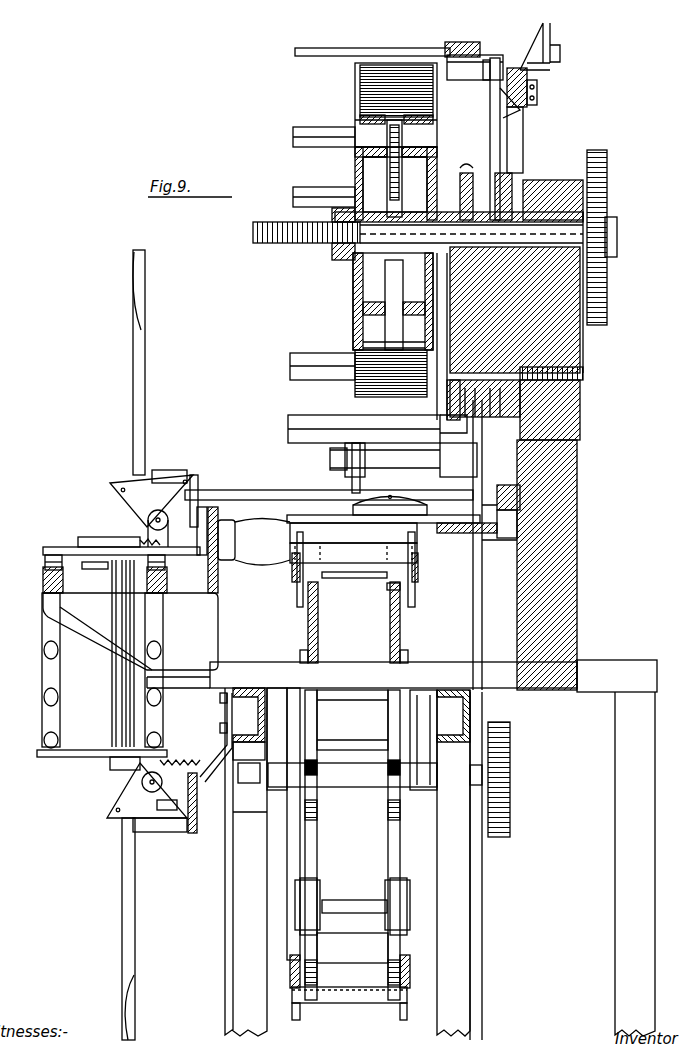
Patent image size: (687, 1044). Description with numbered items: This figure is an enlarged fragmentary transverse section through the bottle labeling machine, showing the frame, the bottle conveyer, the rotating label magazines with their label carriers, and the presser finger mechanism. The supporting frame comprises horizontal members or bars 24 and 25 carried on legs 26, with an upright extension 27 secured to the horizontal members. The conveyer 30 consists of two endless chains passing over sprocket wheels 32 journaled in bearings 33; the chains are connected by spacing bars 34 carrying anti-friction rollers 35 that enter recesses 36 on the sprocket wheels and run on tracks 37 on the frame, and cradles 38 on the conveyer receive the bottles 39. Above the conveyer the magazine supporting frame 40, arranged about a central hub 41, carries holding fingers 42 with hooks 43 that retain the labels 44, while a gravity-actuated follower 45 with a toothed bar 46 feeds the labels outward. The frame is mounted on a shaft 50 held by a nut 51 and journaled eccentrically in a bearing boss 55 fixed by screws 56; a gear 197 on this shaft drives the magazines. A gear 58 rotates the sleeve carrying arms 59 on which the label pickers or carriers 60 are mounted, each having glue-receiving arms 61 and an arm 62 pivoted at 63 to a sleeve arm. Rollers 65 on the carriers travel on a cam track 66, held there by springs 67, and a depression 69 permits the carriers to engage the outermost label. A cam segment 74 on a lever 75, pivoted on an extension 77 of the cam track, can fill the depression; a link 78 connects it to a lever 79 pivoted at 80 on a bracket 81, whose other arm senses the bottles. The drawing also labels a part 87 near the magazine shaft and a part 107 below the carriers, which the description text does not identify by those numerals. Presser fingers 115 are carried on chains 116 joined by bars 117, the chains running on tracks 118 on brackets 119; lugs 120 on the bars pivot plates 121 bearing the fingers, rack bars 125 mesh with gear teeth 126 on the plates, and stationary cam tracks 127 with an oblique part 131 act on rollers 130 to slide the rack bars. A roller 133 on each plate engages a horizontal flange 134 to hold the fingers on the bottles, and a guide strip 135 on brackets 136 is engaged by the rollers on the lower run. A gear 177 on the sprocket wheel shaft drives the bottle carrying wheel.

The horizontal members or bars 24 is at (351, 715).
The horizontal members or bars 25 is at (402, 676).
The legs 26 is at (440, 862).
The upright extension 27 is at (573, 512).
The conveyer 30 is at (290, 848).
The sprocket wheels 32 is at (388, 824).
The bearings 33 is at (252, 800).
The spacing bars 34 is at (335, 572).
The anti-friction rollers 35 is at (388, 587).
The recesses or depressions 36 is at (388, 806).
The tracks 37 is at (390, 630).
The cradles 38 is at (353, 753).
The bottles 39 is at (392, 520).
The magazine supporting frame 40 is at (395, 168).
The central hub 41 is at (400, 336).
The holding fingers or posts 42 is at (368, 86).
The hooks or projections 43 is at (388, 62).
The labels 44 is at (400, 72).
The gravity-actuated follower 45 is at (365, 118).
The toothed bar 46 is at (388, 163).
The shaft 50 is at (253, 234).
The nut 51 is at (335, 260).
The bearing boss 55 is at (545, 330).
The screws 56 is at (590, 373).
The gear 58 is at (507, 172).
The arms 59 is at (490, 80).
The label pickers or carriers 60 is at (458, 45).
The arms 61 is at (316, 48).
The arm 62 is at (471, 266).
The pivot 63 is at (497, 63).
The wheels or rollers 65 is at (530, 538).
The cam track 66 is at (537, 100).
The springs 67 is at (560, 396).
The depression or recessed part 69 is at (505, 95).
The cam segment 74 is at (528, 86).
The lever 75 is at (545, 50).
The arm or extension 77 is at (560, 55).
The cord or link 78 is at (522, 115).
The lever 79 is at (360, 480).
The pivot 80 is at (392, 466).
The bracket 81 is at (473, 596).
The post 87 is at (473, 160).
The bar 107 is at (440, 431).
The presser fingers 115 is at (145, 390).
The chains 116 is at (45, 558).
The bars 117 is at (50, 552).
The bars or tracks 118 is at (43, 590).
The extensions or brackets 119 is at (130, 631).
The lugs 120 is at (140, 522).
The plates 121 is at (169, 522).
The rack bars 125 is at (82, 537).
The gear teeth 126 is at (140, 540).
The stationary cam tracks 127 is at (112, 727).
The anti-friction rollers 130 is at (106, 569).
The oblique part 131 is at (110, 592).
The roller or wheel 133 is at (170, 478).
The track or horizontal flange 134 is at (215, 510).
The track or guide strip 135 is at (190, 833).
The brackets or supports 136 is at (216, 782).
The gear 177 is at (505, 770).
The gear 197 is at (606, 178).